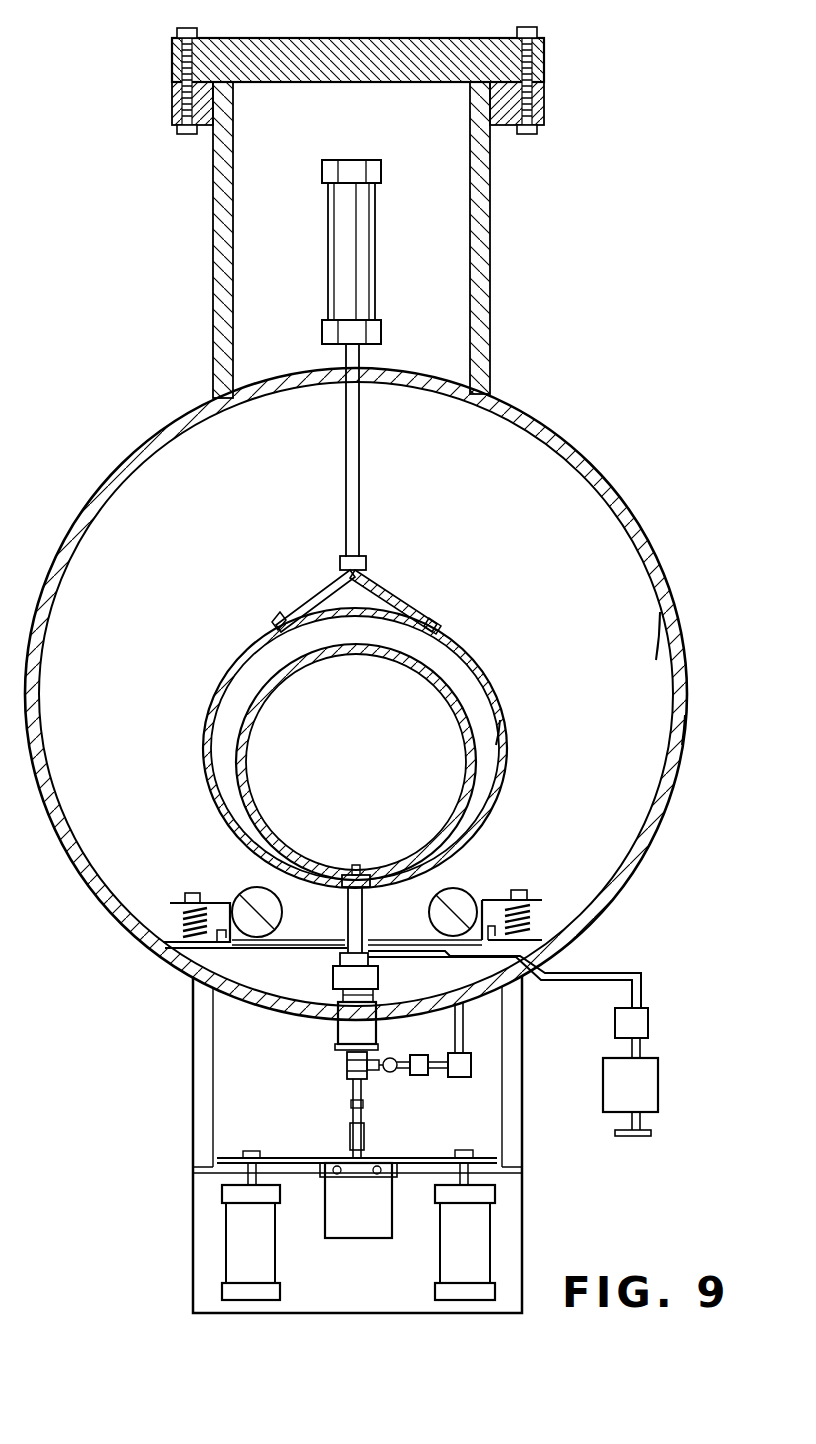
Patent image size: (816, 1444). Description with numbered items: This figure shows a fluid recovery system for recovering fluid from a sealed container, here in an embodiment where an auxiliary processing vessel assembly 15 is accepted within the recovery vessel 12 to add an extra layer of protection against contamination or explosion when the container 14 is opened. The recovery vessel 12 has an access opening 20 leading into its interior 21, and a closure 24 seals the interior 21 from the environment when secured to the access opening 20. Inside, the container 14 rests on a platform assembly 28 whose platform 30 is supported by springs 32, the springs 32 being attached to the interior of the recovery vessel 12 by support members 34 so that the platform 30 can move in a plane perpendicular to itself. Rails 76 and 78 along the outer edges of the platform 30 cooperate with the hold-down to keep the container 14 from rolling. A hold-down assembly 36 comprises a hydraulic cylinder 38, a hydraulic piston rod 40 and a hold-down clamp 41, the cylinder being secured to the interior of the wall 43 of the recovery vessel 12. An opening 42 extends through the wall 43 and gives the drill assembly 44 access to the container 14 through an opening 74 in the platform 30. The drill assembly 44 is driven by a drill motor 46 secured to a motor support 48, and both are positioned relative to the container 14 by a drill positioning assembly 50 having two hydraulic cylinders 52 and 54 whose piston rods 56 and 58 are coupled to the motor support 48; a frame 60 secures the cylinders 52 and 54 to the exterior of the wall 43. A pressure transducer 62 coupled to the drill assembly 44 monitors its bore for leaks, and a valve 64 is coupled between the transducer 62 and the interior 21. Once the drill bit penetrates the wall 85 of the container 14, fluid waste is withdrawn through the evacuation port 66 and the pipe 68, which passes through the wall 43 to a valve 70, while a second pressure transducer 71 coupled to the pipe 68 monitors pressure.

The recovery vessel 12 is at (640, 525).
The container 14 is at (484, 690).
The auxiliary processing vessel assembly 15 is at (498, 712).
The access opening 20 is at (294, 134).
The interior 21 is at (655, 638).
The closure 24 is at (383, 36).
The platform assembly 28 is at (521, 860).
The platform 30 is at (268, 943).
The spring 32 is at (175, 923).
The support member 34 is at (214, 946).
The hold-down assembly 36 is at (323, 408).
The hydraulic cylinder 38 is at (374, 240).
The hydraulic piston rod 40 is at (359, 459).
The hold-down clamp 41 is at (392, 592).
The opening 42 is at (334, 1018).
The wall 43 is at (672, 728).
The drill assembly 44 is at (320, 1066).
The drill motor 46 is at (372, 1215).
The motor support 48 is at (330, 1157).
The drill positioning assembly 50 is at (166, 1287).
The hydraulic cylinder 52 is at (264, 1255).
The hydraulic cylinder 54 is at (479, 1255).
The piston rod 56 is at (247, 1177).
The piston rod 58 is at (470, 1176).
The frame 60 is at (192, 1222).
The pressure transducer 62 is at (418, 1080).
The valve 64 is at (457, 1080).
The evacuation port 66 is at (380, 953).
The pipe 68 is at (423, 950).
The valve 70 is at (603, 1085).
The second pressure transducer 71 is at (615, 1027).
The opening 74 is at (343, 943).
The rail 76 is at (238, 898).
The rail 78 is at (474, 893).
The wall 85 is at (469, 787).